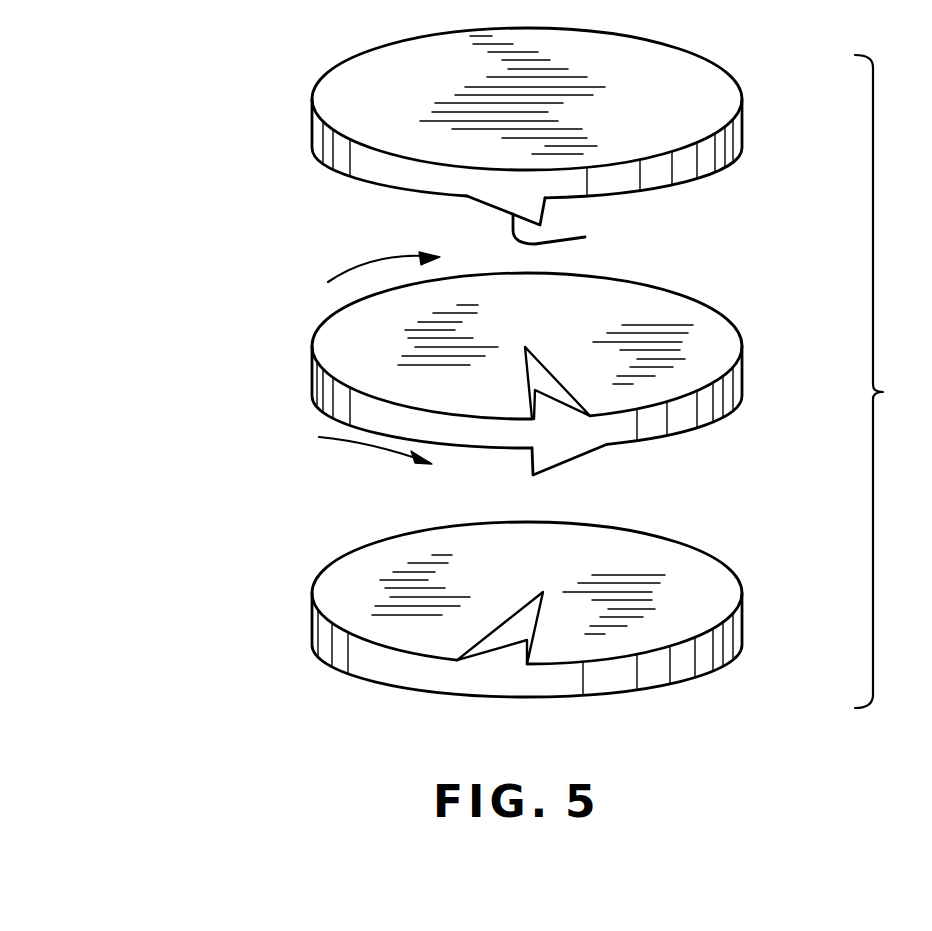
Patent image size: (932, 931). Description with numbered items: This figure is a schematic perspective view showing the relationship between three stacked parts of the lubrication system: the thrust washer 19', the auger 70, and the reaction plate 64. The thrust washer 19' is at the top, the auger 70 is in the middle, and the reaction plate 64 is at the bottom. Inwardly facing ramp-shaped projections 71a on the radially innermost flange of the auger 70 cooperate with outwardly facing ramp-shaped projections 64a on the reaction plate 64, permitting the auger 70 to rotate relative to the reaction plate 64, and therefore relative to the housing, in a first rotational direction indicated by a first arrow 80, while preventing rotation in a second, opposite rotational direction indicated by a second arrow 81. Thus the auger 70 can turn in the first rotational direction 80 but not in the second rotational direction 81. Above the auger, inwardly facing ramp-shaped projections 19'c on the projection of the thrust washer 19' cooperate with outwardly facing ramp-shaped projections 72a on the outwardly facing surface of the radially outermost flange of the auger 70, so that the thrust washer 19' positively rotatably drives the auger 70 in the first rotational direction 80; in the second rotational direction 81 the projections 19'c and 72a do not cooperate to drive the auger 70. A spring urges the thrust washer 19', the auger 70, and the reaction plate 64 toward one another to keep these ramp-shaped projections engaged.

The thrust washer 19' is at (461, 113).
The inwardly facing ramp-shaped projections 19'c is at (575, 220).
The second arrow 81 is at (362, 270).
The auger 70 is at (337, 392).
The outwardly facing ramp-shaped projections 72a is at (547, 380).
The inwardly facing ramp-shaped projections 71a is at (560, 465).
The first arrow 80 is at (362, 453).
The reaction plate 64 is at (338, 609).
The outwardly facing ramp-shaped projections 64a is at (513, 630).